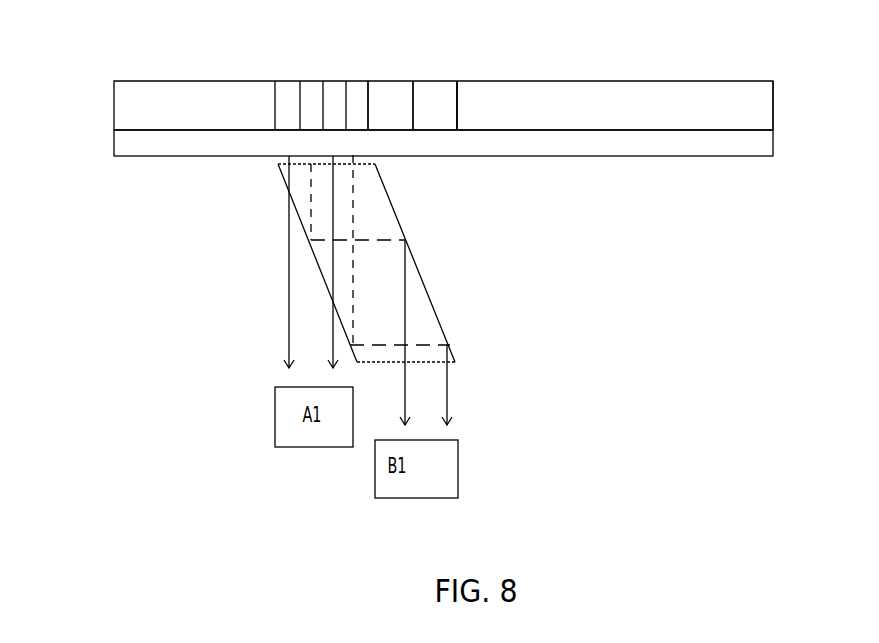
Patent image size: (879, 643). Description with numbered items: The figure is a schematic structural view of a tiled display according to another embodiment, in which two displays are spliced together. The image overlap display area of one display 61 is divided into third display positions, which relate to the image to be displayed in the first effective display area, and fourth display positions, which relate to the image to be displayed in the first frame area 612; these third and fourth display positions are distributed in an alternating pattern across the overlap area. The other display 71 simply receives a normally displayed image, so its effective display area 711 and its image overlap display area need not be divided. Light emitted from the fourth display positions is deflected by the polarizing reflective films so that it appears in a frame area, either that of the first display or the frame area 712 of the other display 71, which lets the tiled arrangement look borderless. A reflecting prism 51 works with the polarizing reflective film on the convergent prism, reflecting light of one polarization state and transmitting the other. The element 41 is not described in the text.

The substrate base layer 41 is at (153, 155).
The display 61 is at (132, 81).
The other display 71 is at (755, 81).
The first frame area 612 is at (390, 105).
The frame area 712 is at (435, 105).
The effective display area 711 is at (615, 105).
The reflecting prism 51 is at (327, 255).